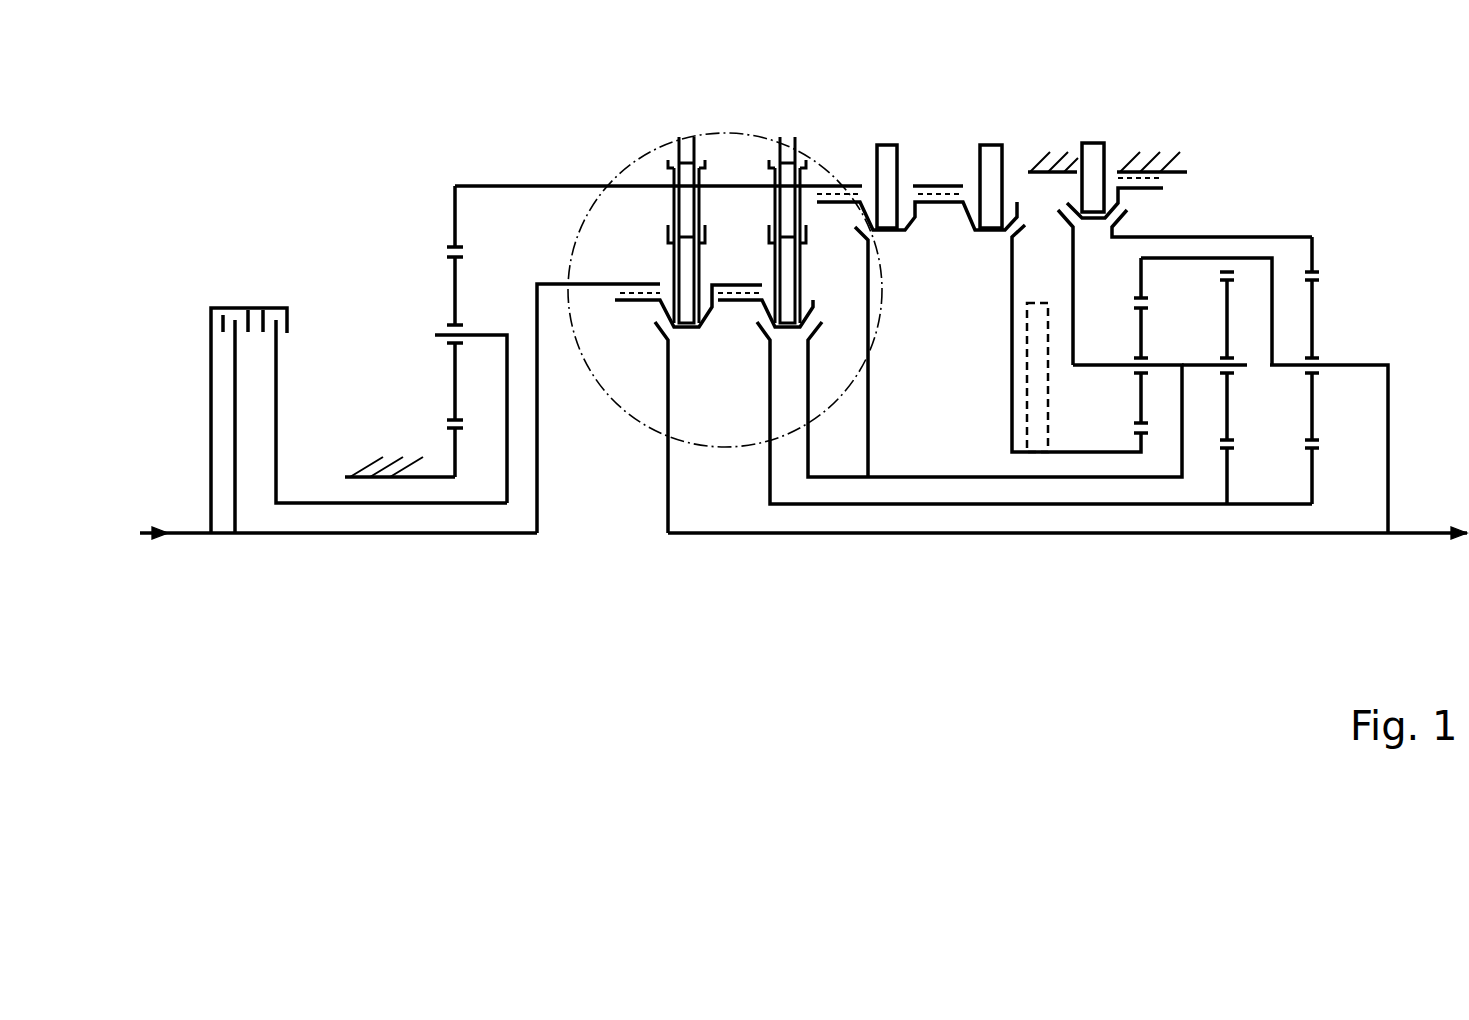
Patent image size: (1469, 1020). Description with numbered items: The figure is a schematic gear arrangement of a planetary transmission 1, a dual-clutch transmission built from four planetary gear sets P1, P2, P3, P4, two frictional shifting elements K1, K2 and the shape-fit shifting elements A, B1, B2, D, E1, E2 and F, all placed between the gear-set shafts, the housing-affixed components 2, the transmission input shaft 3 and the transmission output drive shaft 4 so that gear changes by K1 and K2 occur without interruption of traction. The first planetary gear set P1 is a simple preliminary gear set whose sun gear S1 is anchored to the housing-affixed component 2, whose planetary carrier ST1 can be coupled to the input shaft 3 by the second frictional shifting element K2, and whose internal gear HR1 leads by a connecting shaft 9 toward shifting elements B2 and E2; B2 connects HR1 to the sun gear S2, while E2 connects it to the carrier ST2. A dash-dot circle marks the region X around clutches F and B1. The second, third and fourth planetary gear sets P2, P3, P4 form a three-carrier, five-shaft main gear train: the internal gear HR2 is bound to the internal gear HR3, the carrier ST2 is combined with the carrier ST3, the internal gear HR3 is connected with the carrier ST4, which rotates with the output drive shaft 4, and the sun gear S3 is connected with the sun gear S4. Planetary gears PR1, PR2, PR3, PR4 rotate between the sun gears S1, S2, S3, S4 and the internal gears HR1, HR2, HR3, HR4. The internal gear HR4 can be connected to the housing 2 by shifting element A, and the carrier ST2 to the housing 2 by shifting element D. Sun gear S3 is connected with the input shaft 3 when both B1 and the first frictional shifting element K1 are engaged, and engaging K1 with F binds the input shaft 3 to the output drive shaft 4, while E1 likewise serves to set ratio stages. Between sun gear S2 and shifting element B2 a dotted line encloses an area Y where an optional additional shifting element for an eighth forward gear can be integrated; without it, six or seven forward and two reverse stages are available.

The planetary transmission 1 is at (248, 200).
The housing-affixed component 2 is at (363, 473).
The transmission input shaft 3 is at (190, 540).
The transmission output drive shaft 4 is at (1393, 537).
The shaft 9 is at (513, 183).
The detail region X is at (648, 148).
The dotted line enclosed area Y is at (1038, 397).
The first frictional shifting element K1 is at (432, 399).
The second frictional shifting element K2 is at (386, 384).
The first planetary gear set P1 is at (435, 264).
The second planetary gear set P2 is at (1168, 457).
The third planetary gear set P3 is at (1324, 341).
The fourth planetary gear set P4 is at (1353, 431).
The internal gear of the first planetary gear set HR1 is at (453, 200).
The internal gear of the second planetary gear set HR2 is at (1138, 290).
The internal gear of the third planetary gear set HR3 is at (1220, 265).
The internal gear of the fourth planetary gear set HR4 is at (1312, 262).
The planetary gear of the first planetary gear set PR1 is at (455, 288).
The planetary gear of the second planetary gear set PR2 is at (1137, 330).
The planetary gear of the third planetary gear set PR3 is at (1232, 302).
The planetary gear of the fourth planetary gear set PR4 is at (1312, 330).
The sun gear of the first planetary gear set S1 is at (455, 442).
The sun gear of the second planetary gear set S2 is at (1143, 445).
The sun gear of the third planetary gear set S3 is at (1230, 458).
The sun gear of the fourth planetary gear set S4 is at (1313, 460).
The planetary carrier of the first planetary gear set ST1 is at (480, 332).
The carrier of the second planetary gear set ST2 is at (1107, 365).
The carrier of the third planetary gear set ST3 is at (1193, 365).
The carrier of the fourth planetary gear set ST4 is at (1290, 365).
The shape-fit shifting element A is at (1212, 219).
The shape-fit shifting element B1 is at (1015, 320).
The shape-fit shifting element B2 is at (1045, 287).
The shape-fit shifting element D is at (1076, 327).
The shape-fit shifting element E1 is at (839, 399).
The shape-fit shifting element E2 is at (844, 352).
The shape-fit shifting element F is at (688, 335).